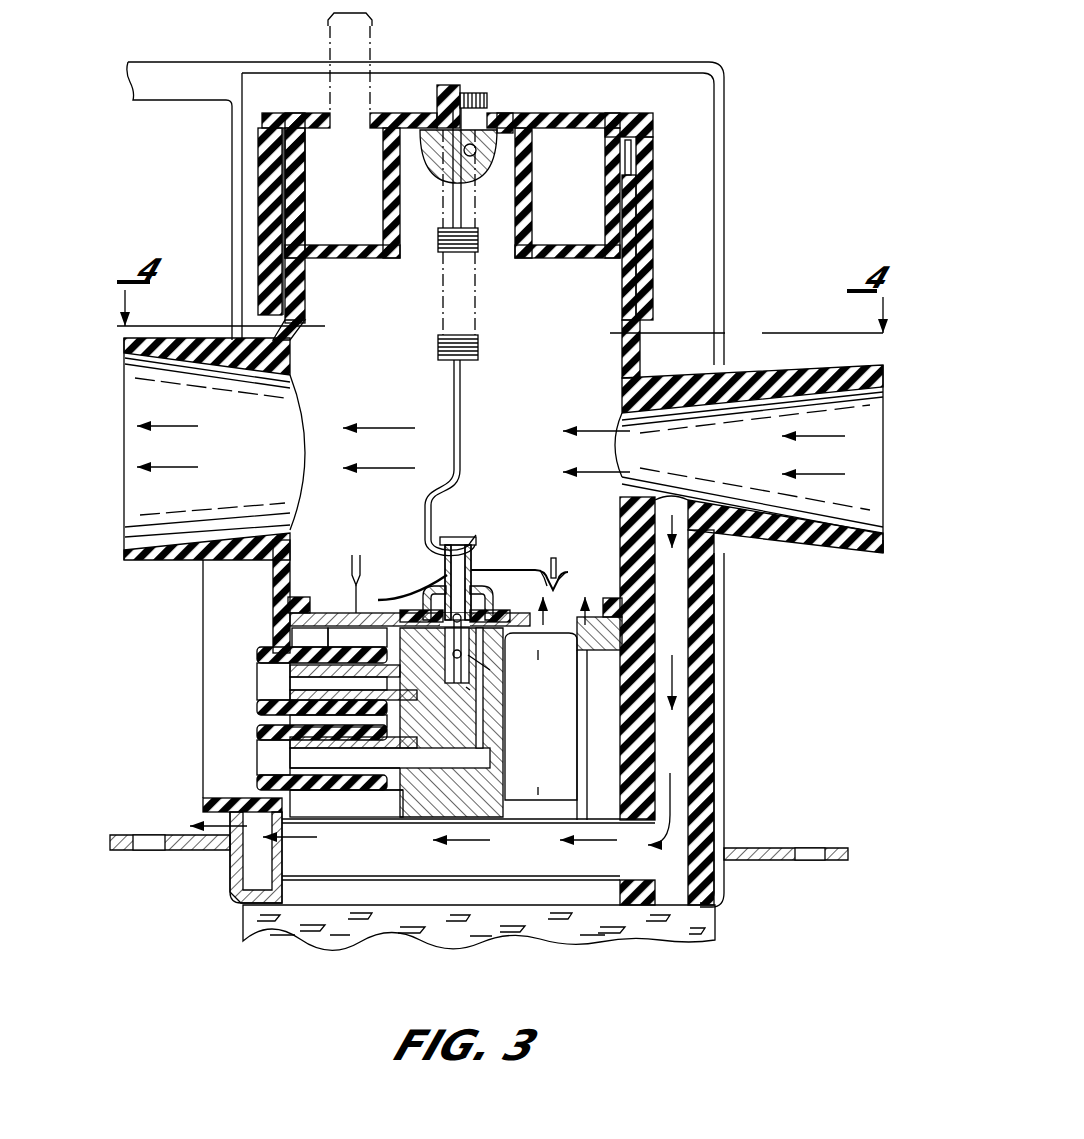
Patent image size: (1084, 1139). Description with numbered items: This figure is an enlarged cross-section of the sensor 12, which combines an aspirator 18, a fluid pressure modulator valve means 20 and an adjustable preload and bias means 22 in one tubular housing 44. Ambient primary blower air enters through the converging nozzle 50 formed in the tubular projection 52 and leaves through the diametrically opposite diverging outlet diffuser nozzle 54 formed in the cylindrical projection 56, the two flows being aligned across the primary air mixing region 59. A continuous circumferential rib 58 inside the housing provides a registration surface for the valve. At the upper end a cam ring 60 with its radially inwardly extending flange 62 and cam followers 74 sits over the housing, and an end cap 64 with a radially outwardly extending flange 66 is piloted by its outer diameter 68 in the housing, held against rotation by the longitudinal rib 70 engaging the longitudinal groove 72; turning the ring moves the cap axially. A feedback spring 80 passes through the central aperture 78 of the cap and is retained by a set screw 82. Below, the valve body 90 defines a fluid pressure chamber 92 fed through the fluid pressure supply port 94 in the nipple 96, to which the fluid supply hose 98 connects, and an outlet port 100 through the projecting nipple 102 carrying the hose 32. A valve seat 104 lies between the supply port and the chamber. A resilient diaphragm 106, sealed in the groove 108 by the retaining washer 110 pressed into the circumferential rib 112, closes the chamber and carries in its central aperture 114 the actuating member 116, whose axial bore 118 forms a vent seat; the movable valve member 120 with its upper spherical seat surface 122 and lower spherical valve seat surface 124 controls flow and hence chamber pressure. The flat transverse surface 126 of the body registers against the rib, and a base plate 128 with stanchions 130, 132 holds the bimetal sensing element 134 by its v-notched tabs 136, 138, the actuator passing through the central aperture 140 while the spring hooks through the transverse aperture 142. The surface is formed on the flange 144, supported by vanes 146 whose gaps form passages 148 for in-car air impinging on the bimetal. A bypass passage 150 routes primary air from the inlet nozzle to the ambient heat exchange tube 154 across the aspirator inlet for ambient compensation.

The sensor 12 is at (193, 692).
The aspirator 18 is at (750, 325).
The fluid pressure modulator valve means 20 is at (537, 735).
The adjustable preload and bias means 22 is at (493, 287).
The hose 32 is at (275, 785).
The tubular housing 44 is at (714, 617).
The converging nozzle 50 is at (800, 540).
The tubular projection 52 is at (815, 555).
The diverging outlet diffuser nozzle 54 is at (210, 540).
The cylindrical projection 56 is at (145, 560).
The circumferential rib 58 is at (607, 598).
The primary air mixing region 59 is at (333, 330).
The cam ring 60 is at (284, 254).
The radially inwardly extending flange 62 is at (280, 141).
The end cap 64 is at (515, 118).
The radially outwardly extending flange 66 is at (638, 118).
The outer diameter 68 is at (653, 206).
The longitudinal rib 70 is at (450, 148).
The longitudinal groove 72 is at (448, 178).
The cam followers 74 is at (620, 186).
The central aperture 78 is at (488, 120).
The feedback spring 80 is at (438, 342).
The set screw 82 is at (470, 92).
The valve body 90 is at (502, 767).
The fluid pressure chamber 92 is at (433, 630).
The fluid pressure supply port 94 is at (300, 680).
The nipple 96 is at (300, 691).
The fluid supply hose 98 is at (257, 652).
The outlet port 100 is at (320, 765).
The projecting nipple 102 is at (280, 760).
The valve seat 104 is at (452, 668).
The resilient diaphragm 106 is at (480, 605).
The groove 108 is at (530, 635).
The retaining washer 110 is at (512, 575).
The circumferential rib 112 is at (372, 608).
The central aperture 114 is at (468, 655).
The actuating member 116 is at (445, 575).
The axial bore 118 is at (458, 532).
The movable valve member 120 is at (425, 605).
The upper spherical seat surface 122 is at (440, 587).
The lower spherical valve seat surface 124 is at (466, 687).
The flat transverse surface 126 is at (286, 597).
The base plate 128 is at (568, 630).
The stanchion 130 is at (353, 560).
The stanchion 132 is at (556, 555).
The bimetal sensing element 134 is at (546, 566).
The v-notched tab 136 is at (350, 578).
The v-notched tab 138 is at (566, 572).
The central aperture 140 is at (467, 548).
The transverse aperture 142 is at (440, 545).
The flange 144 is at (604, 655).
The vanes 146 is at (538, 787).
The passages 148 is at (540, 660).
The bypass passage 150 is at (700, 588).
The ambient heat exchange tube 154 is at (587, 878).